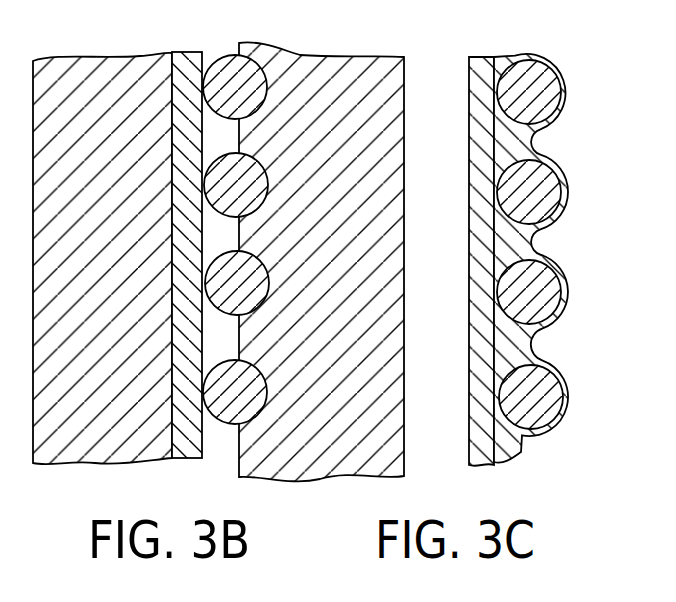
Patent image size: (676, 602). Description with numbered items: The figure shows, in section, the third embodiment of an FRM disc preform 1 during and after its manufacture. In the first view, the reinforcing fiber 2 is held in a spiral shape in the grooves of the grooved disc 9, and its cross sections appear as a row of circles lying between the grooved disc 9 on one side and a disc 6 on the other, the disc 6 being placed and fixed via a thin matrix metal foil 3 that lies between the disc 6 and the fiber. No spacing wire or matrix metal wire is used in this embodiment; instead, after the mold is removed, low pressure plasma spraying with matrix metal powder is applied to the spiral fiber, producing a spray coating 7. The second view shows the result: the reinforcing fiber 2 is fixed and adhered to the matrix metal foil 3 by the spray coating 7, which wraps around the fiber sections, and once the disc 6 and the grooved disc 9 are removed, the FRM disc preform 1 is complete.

In FIG. 3C, the FRM disc preform 1 is at (547, 260).
In FIG. 3B, the reinforcing fiber 2 is at (222, 426).
In FIG. 3C, the reinforcing fiber 2 is at (556, 68).
In FIG. 3B, the matrix metal foil 3 is at (162, 84).
In FIG. 3C, the matrix metal foil 3 is at (474, 128).
In FIG. 3B, the disc 6 is at (93, 438).
In FIG. 3C, the spray coating 7 is at (533, 147).
In FIG. 3B, the disc with grooves 9 is at (396, 437).